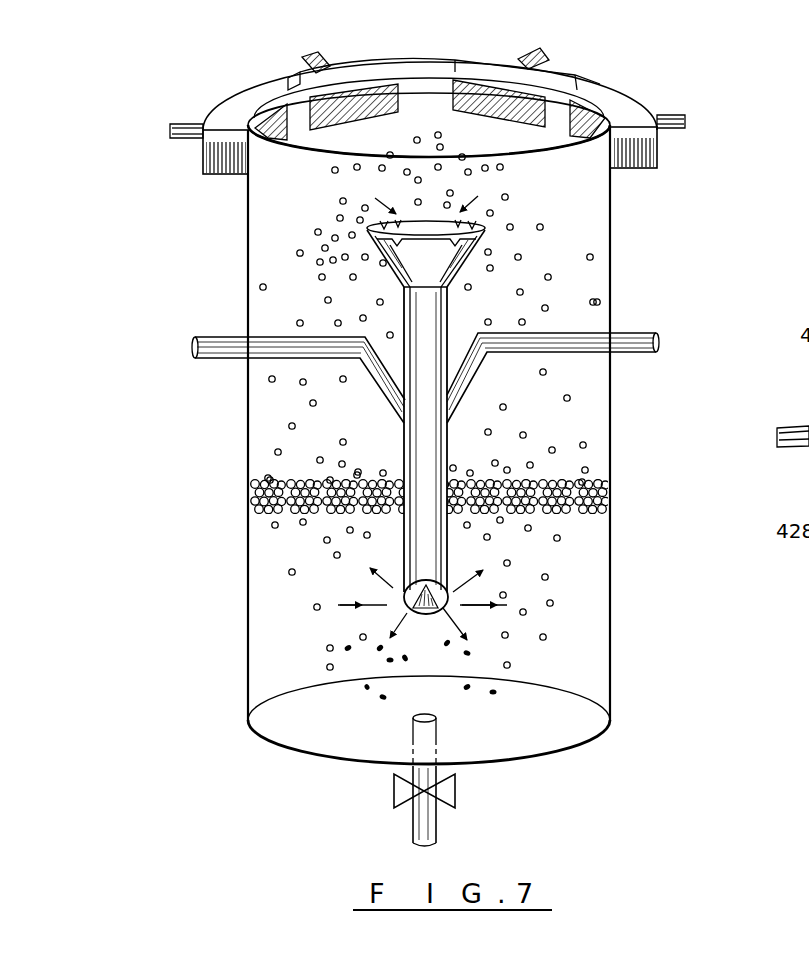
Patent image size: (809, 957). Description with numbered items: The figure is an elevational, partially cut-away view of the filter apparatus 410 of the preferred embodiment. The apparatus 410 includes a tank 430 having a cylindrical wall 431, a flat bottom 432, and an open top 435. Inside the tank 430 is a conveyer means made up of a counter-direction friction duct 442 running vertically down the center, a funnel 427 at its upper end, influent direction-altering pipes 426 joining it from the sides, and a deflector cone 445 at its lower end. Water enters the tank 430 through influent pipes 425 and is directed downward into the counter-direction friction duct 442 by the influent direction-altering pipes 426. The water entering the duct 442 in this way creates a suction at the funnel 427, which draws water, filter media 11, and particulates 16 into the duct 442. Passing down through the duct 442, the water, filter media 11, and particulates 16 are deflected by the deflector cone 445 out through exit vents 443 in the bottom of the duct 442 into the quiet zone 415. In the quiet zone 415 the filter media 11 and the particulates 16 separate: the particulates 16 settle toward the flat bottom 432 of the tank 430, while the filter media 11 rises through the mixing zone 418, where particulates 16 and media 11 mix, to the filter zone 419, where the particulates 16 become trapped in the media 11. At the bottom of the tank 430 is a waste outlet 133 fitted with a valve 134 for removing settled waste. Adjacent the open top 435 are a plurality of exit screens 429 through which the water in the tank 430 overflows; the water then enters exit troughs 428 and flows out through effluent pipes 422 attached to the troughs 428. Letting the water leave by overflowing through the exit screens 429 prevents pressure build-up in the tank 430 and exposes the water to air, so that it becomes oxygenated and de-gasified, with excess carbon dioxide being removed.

The filter apparatus 410 is at (722, 184).
The filter media 11 is at (570, 489).
The particulates 16 is at (346, 647).
The waste outlet 133 is at (440, 816).
The valve 134 is at (405, 790).
The quiet zone 415 is at (596, 659).
The mixing zone 418 is at (275, 542).
The filter zone 419 is at (268, 391).
The effluent pipes 422 is at (188, 133).
The influent pipes 425 is at (228, 339).
The influent direction-altering pipes 426 is at (388, 397).
The funnel 427 is at (365, 231).
The exit troughs 428 is at (293, 77).
The exit screens 429 is at (355, 95).
The tank 430 is at (607, 540).
The cylindrical wall 431 is at (248, 603).
The flat bottom 432 is at (575, 745).
The open top 435 is at (447, 35).
The counter-direction friction duct 442 is at (448, 437).
The exit vents 443 is at (448, 582).
The deflector cone 445 is at (427, 613).